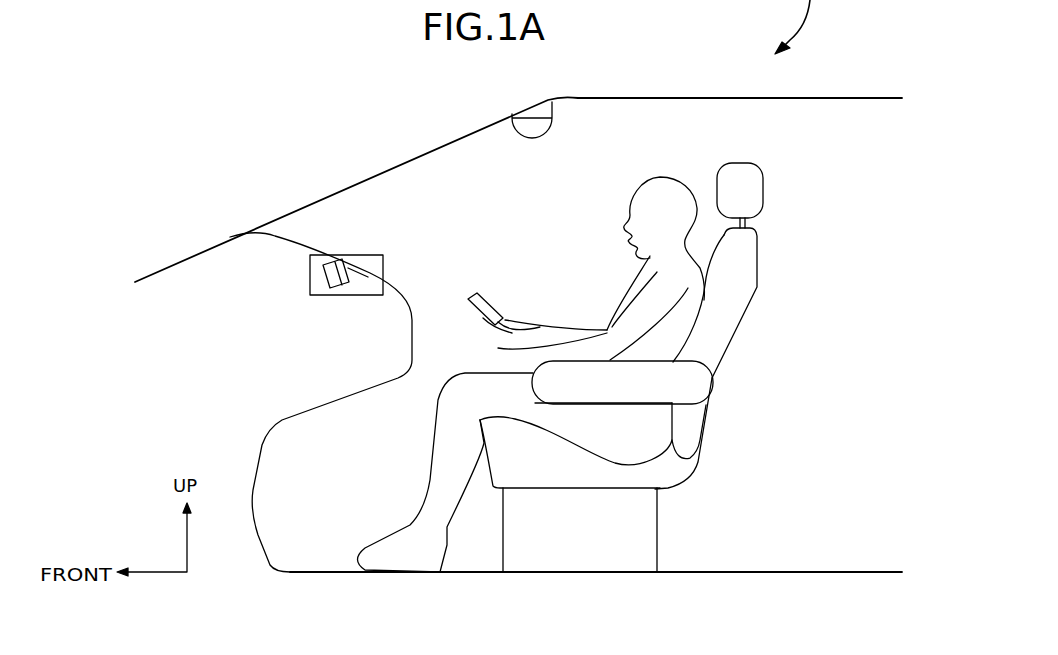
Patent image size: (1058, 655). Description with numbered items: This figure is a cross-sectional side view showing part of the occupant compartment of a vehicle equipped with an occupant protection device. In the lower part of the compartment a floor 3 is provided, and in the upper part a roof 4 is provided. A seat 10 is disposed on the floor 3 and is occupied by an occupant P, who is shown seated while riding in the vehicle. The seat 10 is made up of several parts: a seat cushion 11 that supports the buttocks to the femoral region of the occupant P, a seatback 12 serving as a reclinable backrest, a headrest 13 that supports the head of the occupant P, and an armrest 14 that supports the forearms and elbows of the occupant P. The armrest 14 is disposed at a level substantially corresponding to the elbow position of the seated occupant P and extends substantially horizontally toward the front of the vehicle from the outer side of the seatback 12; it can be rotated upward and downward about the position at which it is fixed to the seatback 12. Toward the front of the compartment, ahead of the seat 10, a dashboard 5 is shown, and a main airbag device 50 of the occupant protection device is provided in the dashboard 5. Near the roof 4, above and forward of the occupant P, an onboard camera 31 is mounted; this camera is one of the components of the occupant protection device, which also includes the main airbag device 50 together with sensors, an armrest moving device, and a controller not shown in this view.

The floor 3 is at (868, 570).
The roof 4 is at (866, 96).
The dashboard 5 is at (282, 258).
The seat 10 is at (781, 260).
The seat cushion 11 is at (622, 478).
The seatback 12 is at (708, 327).
The headrest 13 is at (750, 190).
The armrest 14 is at (688, 387).
The onboard camera 31 is at (532, 140).
The main airbag device 50 is at (344, 297).
The occupant P is at (665, 175).